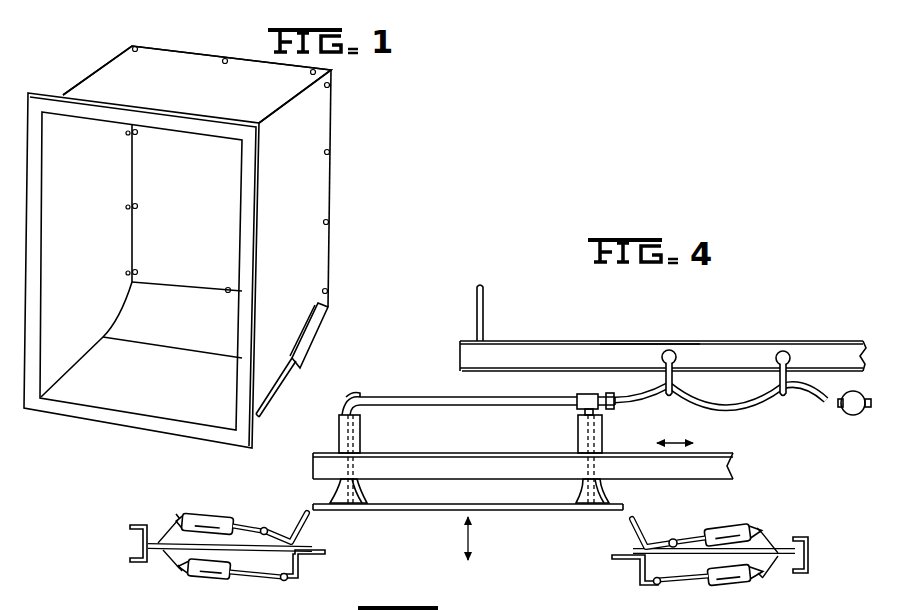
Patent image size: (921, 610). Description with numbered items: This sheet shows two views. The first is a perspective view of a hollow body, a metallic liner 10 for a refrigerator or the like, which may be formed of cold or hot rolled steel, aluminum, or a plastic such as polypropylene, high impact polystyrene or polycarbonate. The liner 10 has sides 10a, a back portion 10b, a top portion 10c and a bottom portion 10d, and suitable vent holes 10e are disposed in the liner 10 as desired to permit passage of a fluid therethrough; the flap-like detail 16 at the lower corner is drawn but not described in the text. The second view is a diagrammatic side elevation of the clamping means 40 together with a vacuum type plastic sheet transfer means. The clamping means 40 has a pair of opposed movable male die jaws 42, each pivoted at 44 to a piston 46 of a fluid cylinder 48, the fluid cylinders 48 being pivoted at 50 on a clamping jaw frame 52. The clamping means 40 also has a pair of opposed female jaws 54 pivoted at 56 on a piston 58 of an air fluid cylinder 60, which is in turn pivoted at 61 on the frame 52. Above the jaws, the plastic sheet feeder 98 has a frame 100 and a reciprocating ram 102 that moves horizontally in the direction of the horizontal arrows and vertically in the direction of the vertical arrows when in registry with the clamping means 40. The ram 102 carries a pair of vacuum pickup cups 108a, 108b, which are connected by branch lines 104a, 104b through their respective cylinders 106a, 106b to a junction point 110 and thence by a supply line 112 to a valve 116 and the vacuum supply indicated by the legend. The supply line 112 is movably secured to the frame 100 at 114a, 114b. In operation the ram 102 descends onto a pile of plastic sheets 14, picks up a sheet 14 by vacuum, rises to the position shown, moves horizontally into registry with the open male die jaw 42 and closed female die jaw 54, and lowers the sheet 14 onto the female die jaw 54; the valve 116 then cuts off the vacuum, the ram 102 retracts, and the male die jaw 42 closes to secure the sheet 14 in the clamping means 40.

In FIG. 1, the liner 10 is at (338, 128).
In FIG. 1, the sides 10a is at (117, 180).
In FIG. 1, the back portion 10b is at (215, 216).
In FIG. 1, the top portion 10c is at (100, 82).
In FIG. 1, the bottom portion 10d is at (120, 397).
In FIG. 1, the vent holes 10e is at (376, 281).
In FIG. 1, the hinged flap 16 is at (184, 402).
In FIG. 4, the plastic sheet 14 is at (436, 511).
In FIG. 4, the clamping means 40 is at (175, 505).
In FIG. 4, the male die jaws 42 is at (298, 539).
In FIG. 4, the pivot 44 is at (263, 527).
In FIG. 4, the piston 46 is at (240, 526).
In FIG. 4, the fluid cylinder 48 is at (200, 516).
In FIG. 4, the pivot 50 is at (178, 520).
In FIG. 4, the clamping jaw frame 52 is at (166, 556).
In FIG. 4, the female die jaws 54 is at (309, 557).
In FIG. 4, the pivot 56 is at (283, 582).
In FIG. 4, the piston 58 is at (246, 579).
In FIG. 4, the air fluid cylinder 60 is at (203, 580).
In FIG. 4, the pivot 61 is at (178, 570).
In FIG. 4, the plastic sheet feeder 98 is at (554, 338).
In FIG. 4, the frame 100 is at (633, 341).
In FIG. 4, the reciprocating ram 102 is at (728, 463).
In FIG. 4, the branch line 104a is at (362, 446).
In FIG. 4, the branch line 104b is at (604, 440).
In FIG. 4, the cylinder 106a is at (362, 428).
In FIG. 4, the cylinder 106b is at (578, 431).
In FIG. 4, the vacuum pickup cup 108a is at (363, 498).
In FIG. 4, the vacuum pickup cup 108b is at (578, 495).
In FIG. 4, the junction point 110 is at (578, 395).
In FIG. 4, the supply line 112 is at (720, 409).
In FIG. 4, the securing point 114a is at (674, 351).
In FIG. 4, the securing point 114b is at (785, 351).
In FIG. 4, the valve 116 is at (871, 411).